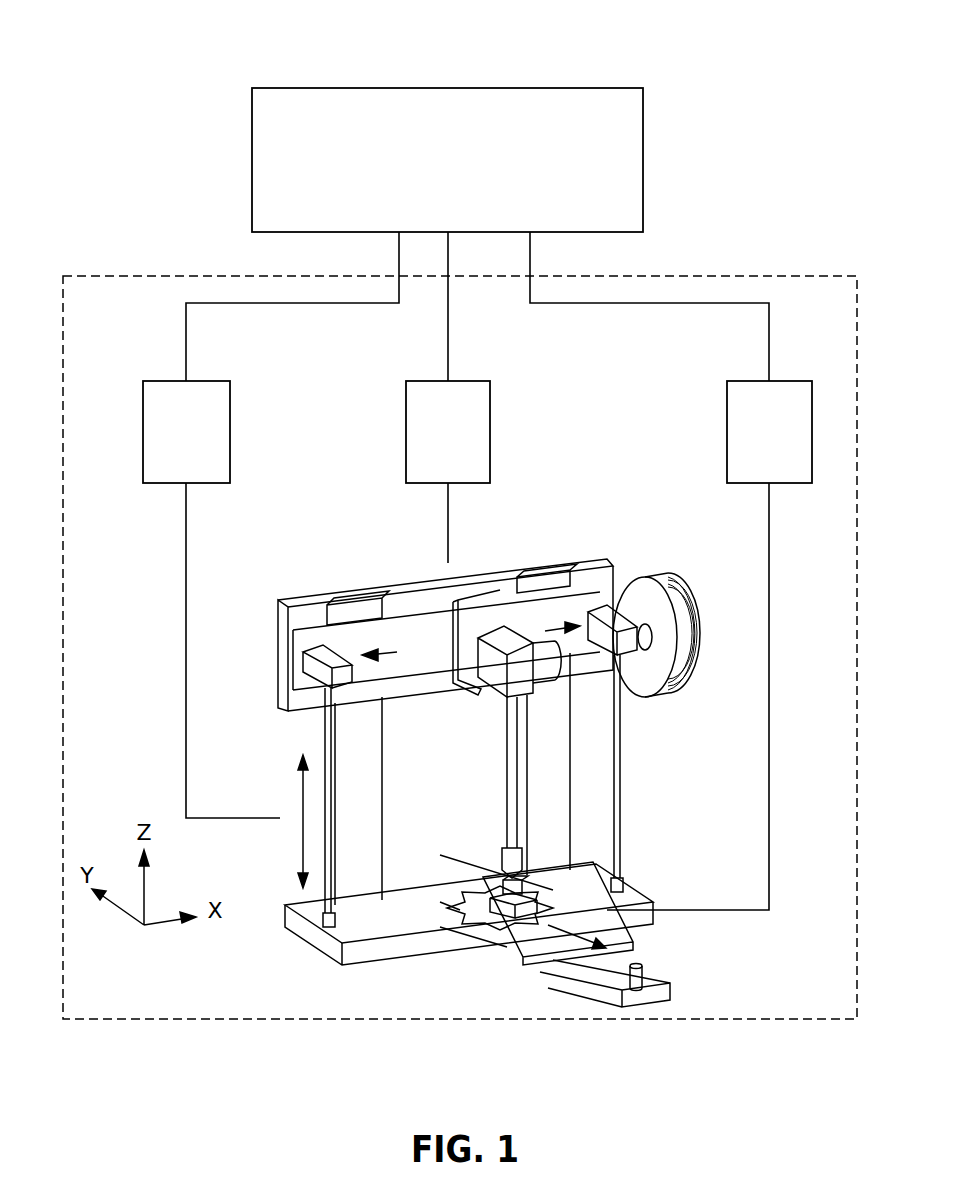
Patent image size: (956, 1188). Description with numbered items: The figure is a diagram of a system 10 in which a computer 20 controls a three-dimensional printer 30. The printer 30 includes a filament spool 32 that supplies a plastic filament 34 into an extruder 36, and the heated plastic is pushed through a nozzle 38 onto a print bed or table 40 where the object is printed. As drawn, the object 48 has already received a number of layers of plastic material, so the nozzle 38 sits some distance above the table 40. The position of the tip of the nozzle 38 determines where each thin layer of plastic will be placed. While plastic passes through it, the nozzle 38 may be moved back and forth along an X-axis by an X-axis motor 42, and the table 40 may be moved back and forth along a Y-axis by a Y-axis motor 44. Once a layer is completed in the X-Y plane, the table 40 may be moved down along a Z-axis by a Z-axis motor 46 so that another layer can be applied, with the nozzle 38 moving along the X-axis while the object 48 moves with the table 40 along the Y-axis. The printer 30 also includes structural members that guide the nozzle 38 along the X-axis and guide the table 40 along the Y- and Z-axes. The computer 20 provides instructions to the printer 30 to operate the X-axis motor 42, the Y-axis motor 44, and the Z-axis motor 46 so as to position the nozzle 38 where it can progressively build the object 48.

The system 10 is at (182, 97).
The computer 20 is at (575, 88).
The three-dimensional printer 30 is at (775, 275).
The filament spool 32 is at (668, 578).
The plastic filament 34 is at (528, 638).
The extruder 36 is at (503, 637).
The nozzle 38 is at (502, 862).
The table 40 is at (502, 945).
The X-axis motor 42 is at (478, 380).
The Y-axis motor 44 is at (802, 380).
The Z-axis motor 46 is at (217, 380).
The object 48 is at (532, 884).